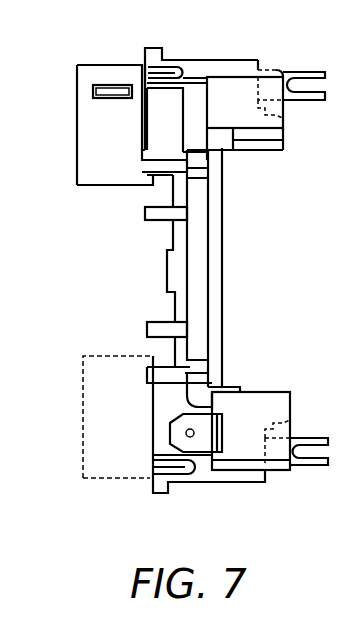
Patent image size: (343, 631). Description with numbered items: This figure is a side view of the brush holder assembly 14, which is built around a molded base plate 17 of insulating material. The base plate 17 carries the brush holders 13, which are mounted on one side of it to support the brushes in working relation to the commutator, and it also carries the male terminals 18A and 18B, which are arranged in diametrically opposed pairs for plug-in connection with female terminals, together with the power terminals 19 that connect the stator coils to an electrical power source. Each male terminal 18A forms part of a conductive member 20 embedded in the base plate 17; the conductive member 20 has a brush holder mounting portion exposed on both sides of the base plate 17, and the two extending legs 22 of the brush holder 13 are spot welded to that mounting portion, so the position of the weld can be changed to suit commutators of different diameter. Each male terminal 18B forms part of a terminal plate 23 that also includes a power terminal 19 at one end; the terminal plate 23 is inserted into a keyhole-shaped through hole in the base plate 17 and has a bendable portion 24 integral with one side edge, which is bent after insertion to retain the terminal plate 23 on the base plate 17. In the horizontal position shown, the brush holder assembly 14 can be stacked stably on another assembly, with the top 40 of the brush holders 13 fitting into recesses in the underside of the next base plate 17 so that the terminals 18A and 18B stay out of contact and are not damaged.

The brush holder 13 is at (110, 78).
The brush holder assembly 14 is at (220, 482).
The base plate 17 is at (180, 272).
The male terminal 18A is at (300, 72).
The male terminal 18B is at (310, 473).
The power terminal 19 is at (170, 434).
The conductive member 20 is at (305, 101).
The extending leg 22 is at (142, 108).
The terminal plate 23 is at (307, 440).
The bendable portion 24 is at (222, 410).
The top of the brush holder 40 is at (78, 172).